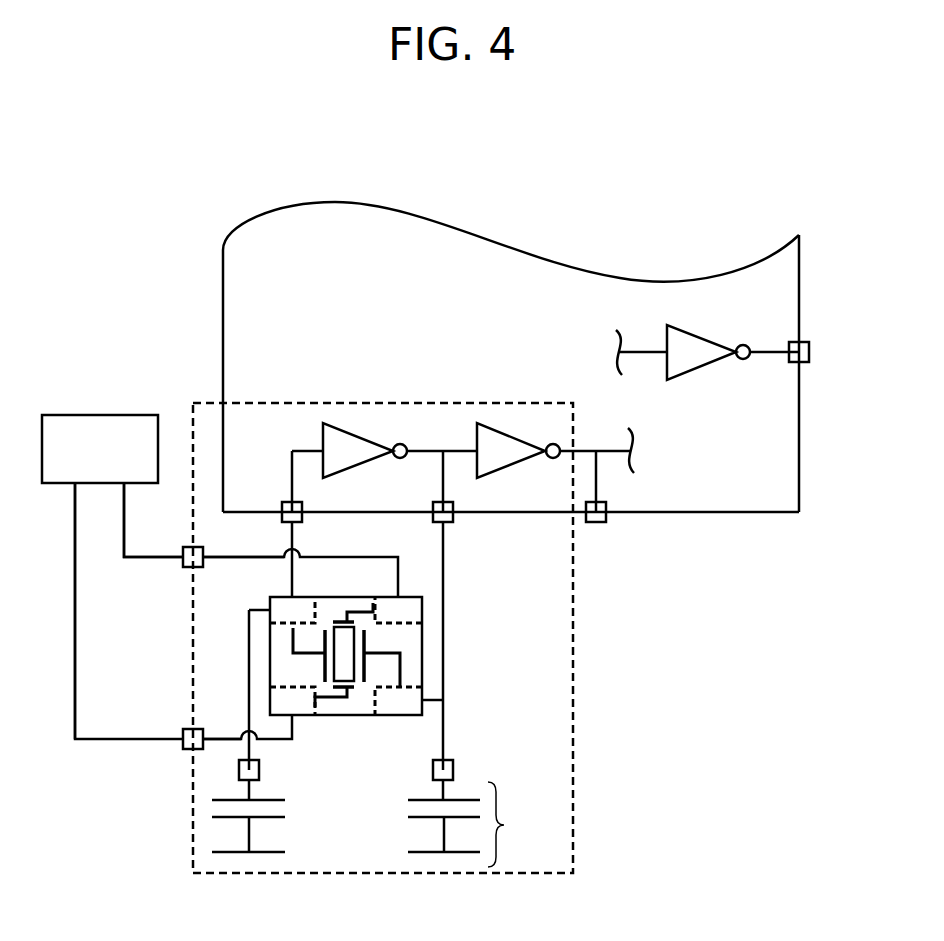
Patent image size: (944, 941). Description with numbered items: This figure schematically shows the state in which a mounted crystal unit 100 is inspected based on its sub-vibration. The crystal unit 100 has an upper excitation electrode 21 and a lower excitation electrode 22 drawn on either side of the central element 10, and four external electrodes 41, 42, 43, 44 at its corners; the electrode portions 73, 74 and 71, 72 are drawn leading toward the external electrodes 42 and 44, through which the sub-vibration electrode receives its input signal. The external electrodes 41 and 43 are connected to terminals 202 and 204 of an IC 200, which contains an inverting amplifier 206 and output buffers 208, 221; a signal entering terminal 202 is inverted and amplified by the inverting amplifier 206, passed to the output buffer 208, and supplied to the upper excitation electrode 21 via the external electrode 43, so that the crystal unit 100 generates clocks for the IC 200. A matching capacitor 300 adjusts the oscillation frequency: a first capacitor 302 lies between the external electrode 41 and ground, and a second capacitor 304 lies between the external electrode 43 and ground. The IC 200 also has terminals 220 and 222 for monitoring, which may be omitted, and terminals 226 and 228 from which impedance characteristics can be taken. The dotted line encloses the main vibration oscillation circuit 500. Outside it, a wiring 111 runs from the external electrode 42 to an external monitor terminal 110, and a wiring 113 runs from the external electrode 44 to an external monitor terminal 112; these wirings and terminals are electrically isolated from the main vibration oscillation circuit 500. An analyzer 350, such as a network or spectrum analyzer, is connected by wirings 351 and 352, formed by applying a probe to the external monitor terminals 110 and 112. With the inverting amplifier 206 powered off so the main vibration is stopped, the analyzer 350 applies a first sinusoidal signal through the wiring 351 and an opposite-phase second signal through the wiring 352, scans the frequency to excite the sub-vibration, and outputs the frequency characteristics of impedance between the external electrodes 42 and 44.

The resonator element 10 is at (365, 652).
The upper excitation electrode 21 is at (320, 612).
The lower excitation electrode 22 is at (368, 612).
The external electrode 41 is at (280, 605).
The external electrode 42 is at (408, 607).
The external electrode 43 is at (397, 700).
The external electrode 44 is at (300, 702).
The lead electrode 71 is at (356, 736).
The lead electrode 72 is at (352, 690).
The lead electrode 73 is at (348, 570).
The lead electrode 74 is at (336, 615).
The crystal unit 100 is at (424, 629).
The external monitor terminal 110 is at (183, 548).
The wiring 111 is at (215, 560).
The external monitor terminal 112 is at (185, 749).
The wiring 113 is at (210, 745).
The IC 200 is at (800, 425).
The terminal 202 is at (282, 505).
The terminal 204 is at (453, 518).
The inverting amplifier 206 is at (360, 438).
The output buffer 208 is at (512, 437).
The terminal 220 is at (606, 518).
The output buffer 221 is at (712, 334).
The terminal 222 is at (809, 345).
The terminal 226 is at (259, 770).
The terminal 228 is at (453, 768).
The matching capacitor 300 is at (522, 824).
The first capacitor 302 is at (275, 808).
The second capacitor 304 is at (422, 806).
The analyzer 350 is at (112, 415).
The wiring 351 is at (143, 560).
The wiring 352 is at (75, 653).
The main vibration oscillation circuit 500 is at (580, 744).